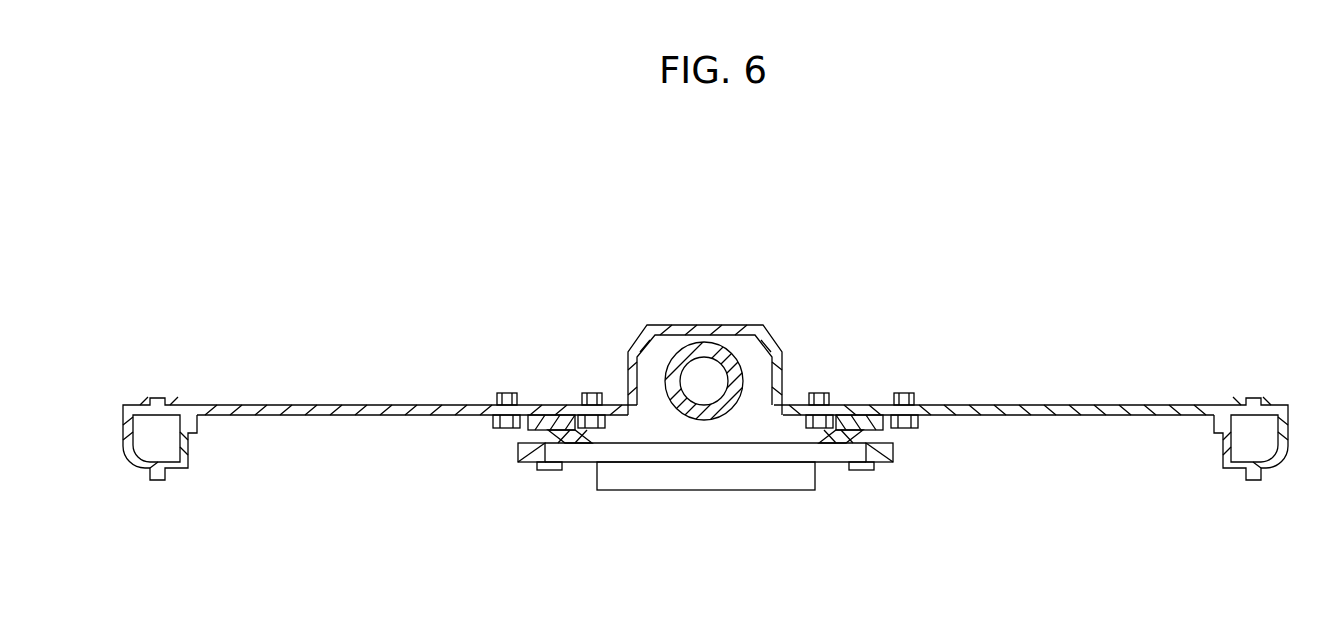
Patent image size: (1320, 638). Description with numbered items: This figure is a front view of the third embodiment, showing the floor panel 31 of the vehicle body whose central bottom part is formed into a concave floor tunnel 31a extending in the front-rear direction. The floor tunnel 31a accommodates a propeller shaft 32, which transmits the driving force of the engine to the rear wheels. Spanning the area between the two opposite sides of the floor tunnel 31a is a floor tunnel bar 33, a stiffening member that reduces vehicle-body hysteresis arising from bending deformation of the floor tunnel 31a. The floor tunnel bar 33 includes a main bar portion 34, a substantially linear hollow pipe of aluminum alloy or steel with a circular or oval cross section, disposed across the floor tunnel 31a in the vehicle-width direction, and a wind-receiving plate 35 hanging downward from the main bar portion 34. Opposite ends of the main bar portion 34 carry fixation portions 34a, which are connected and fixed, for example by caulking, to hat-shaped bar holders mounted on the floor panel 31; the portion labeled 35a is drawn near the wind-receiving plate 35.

The floor panel 31 is at (335, 405).
The floor tunnel 31a is at (745, 343).
The propeller shaft 32 is at (700, 348).
The floor tunnel bar 33 is at (706, 465).
The main bar portion 34 is at (678, 455).
The fixation portion 34a is at (522, 452).
The wind-receiving plate 35 is at (522, 442).
The fastening portion of bracket 35a is at (565, 432).